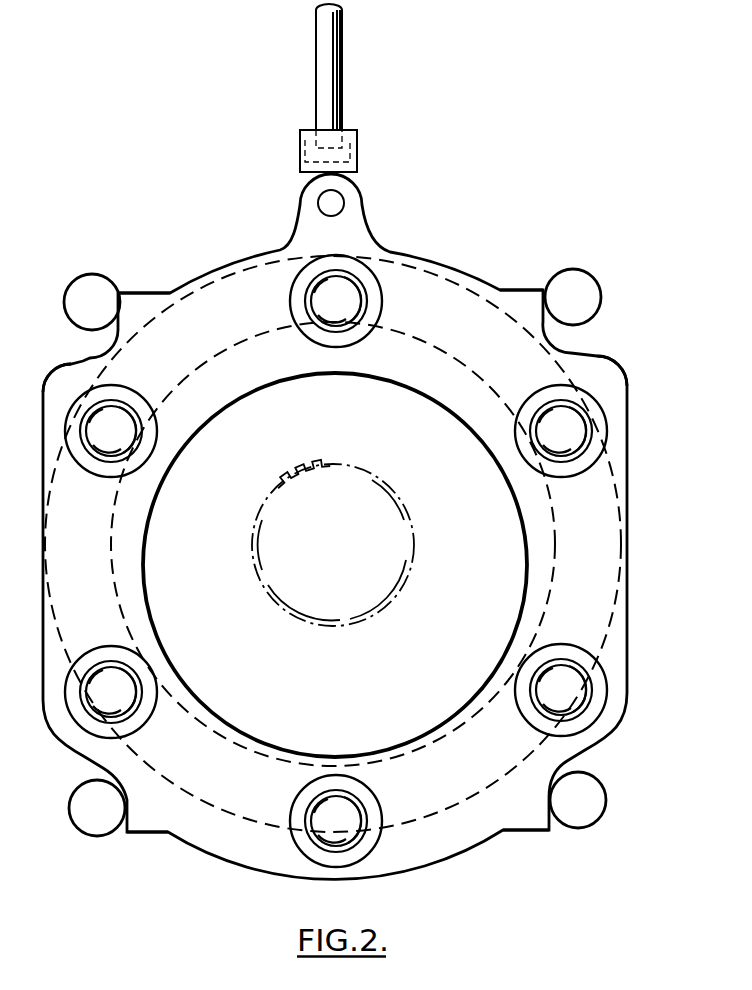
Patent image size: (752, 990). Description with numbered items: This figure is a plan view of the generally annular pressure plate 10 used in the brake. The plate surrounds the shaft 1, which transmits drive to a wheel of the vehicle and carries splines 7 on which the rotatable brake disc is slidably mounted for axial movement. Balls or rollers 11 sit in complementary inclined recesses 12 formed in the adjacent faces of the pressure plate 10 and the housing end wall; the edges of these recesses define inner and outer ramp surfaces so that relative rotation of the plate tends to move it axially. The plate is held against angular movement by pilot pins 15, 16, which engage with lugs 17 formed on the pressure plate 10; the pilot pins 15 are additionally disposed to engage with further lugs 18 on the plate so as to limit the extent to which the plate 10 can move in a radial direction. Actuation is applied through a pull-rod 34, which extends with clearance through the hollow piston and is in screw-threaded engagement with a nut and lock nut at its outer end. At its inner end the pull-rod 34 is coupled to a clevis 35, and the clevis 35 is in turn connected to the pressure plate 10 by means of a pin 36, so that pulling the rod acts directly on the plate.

The shaft 1 is at (357, 515).
The splines 7 is at (286, 482).
The pressure plate 10 is at (253, 276).
The balls or rollers 11 is at (88, 424).
The inclined recesses 12 is at (72, 456).
The pilot pins 15 is at (85, 300).
The pilot pins 16 is at (85, 822).
The lugs 17 is at (133, 300).
The further lugs 18 is at (85, 366).
The pull-rod 34 is at (325, 47).
The clevis 35 is at (345, 172).
The pin 36 is at (335, 203).